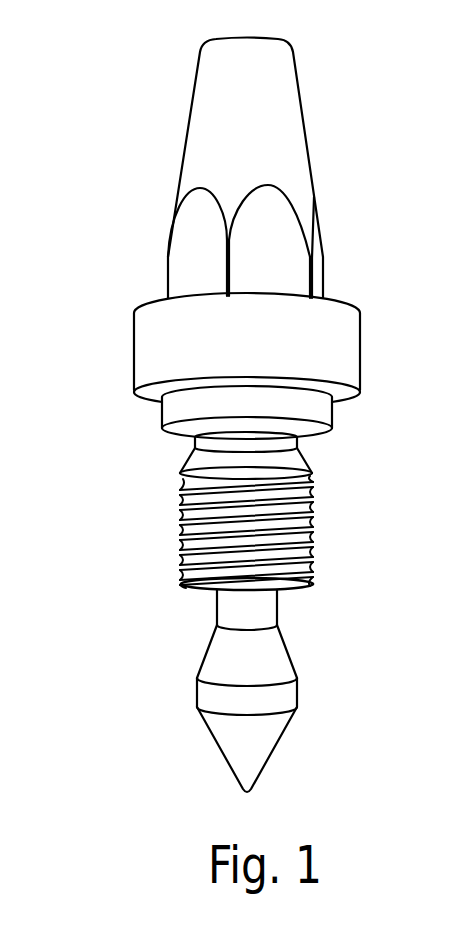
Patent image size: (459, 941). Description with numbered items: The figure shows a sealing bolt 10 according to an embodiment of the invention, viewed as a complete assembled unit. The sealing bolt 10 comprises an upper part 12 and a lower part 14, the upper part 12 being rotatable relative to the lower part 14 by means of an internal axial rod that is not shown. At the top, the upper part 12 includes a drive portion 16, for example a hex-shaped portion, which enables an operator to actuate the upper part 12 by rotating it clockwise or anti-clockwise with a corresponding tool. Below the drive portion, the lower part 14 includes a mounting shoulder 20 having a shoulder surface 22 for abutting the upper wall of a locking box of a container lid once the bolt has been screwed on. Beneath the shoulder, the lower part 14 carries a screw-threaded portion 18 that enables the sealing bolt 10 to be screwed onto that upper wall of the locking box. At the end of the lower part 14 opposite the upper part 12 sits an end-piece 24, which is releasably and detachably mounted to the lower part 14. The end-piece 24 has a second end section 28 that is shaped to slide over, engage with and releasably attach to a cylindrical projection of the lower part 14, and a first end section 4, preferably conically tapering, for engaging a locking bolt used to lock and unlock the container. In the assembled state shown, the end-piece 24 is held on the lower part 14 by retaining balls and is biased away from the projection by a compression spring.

The sealing bolt 10 is at (134, 140).
The upper part 12 is at (385, 40).
The lower part 14 is at (385, 405).
The drive portion 16 is at (168, 259).
The screw-threaded portion 18 is at (165, 483).
The mounting shoulder 20 is at (162, 425).
The shoulder surface 22 is at (181, 440).
The end-piece 24 is at (197, 692).
The second end section 28 is at (167, 593).
The first end section 4 is at (170, 705).